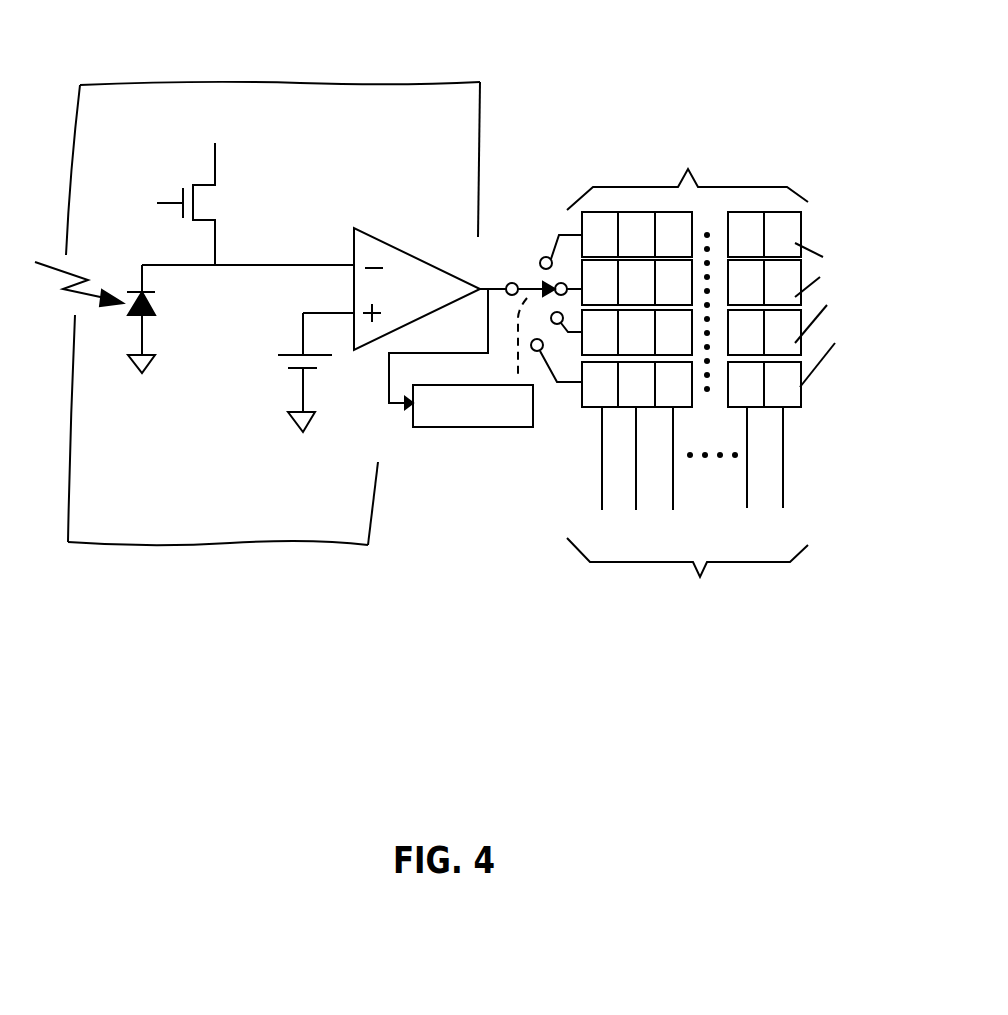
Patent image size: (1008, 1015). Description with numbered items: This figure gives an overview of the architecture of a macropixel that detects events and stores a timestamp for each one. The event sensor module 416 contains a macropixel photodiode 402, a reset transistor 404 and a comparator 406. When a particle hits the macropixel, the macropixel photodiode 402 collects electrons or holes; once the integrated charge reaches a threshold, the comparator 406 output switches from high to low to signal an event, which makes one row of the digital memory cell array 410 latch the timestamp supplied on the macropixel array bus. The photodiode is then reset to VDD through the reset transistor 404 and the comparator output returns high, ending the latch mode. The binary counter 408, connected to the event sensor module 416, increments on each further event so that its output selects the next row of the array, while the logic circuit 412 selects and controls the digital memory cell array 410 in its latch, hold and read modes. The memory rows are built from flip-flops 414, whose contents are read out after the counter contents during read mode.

The macropixel photodiode 402 is at (130, 310).
The reset transistor 404 is at (200, 203).
The comparator 406 is at (380, 255).
The binary counter 408 is at (488, 427).
The digital memory cell array 410 is at (790, 187).
The logic circuit 412 is at (546, 257).
The flip-flops 414 is at (833, 315).
The event sensor module 416 is at (480, 82).